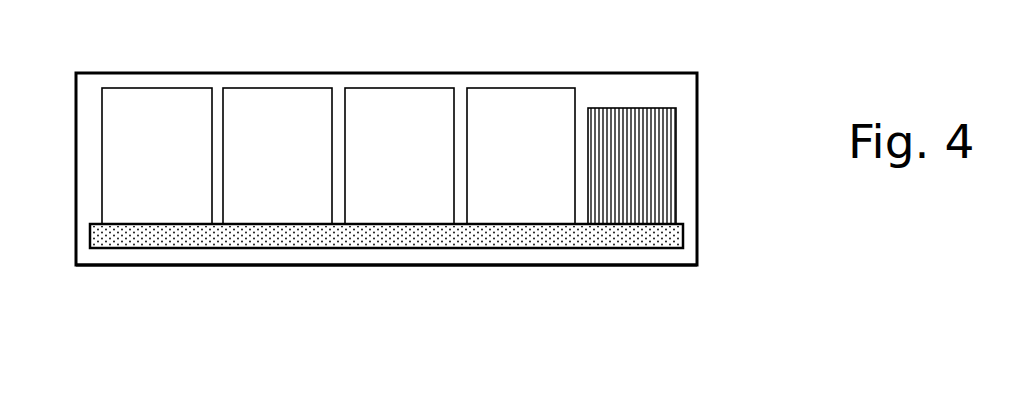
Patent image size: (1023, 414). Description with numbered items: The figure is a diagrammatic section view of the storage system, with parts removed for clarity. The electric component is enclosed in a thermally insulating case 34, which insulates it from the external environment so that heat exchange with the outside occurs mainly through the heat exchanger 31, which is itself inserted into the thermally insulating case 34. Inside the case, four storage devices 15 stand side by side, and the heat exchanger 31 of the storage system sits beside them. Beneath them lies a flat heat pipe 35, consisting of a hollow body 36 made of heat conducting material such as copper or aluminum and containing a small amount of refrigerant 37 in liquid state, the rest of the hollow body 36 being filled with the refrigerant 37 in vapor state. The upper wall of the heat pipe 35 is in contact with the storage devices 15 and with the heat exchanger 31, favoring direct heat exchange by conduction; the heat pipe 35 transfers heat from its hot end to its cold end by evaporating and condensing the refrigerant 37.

The storage devices 15 is at (338, 156).
The heat exchanger 31 is at (662, 155).
The thermally insulating case 34 is at (89, 73).
The heat pipe 35 is at (278, 266).
The hollow body 36 is at (583, 240).
The refrigerant 37 is at (395, 237).